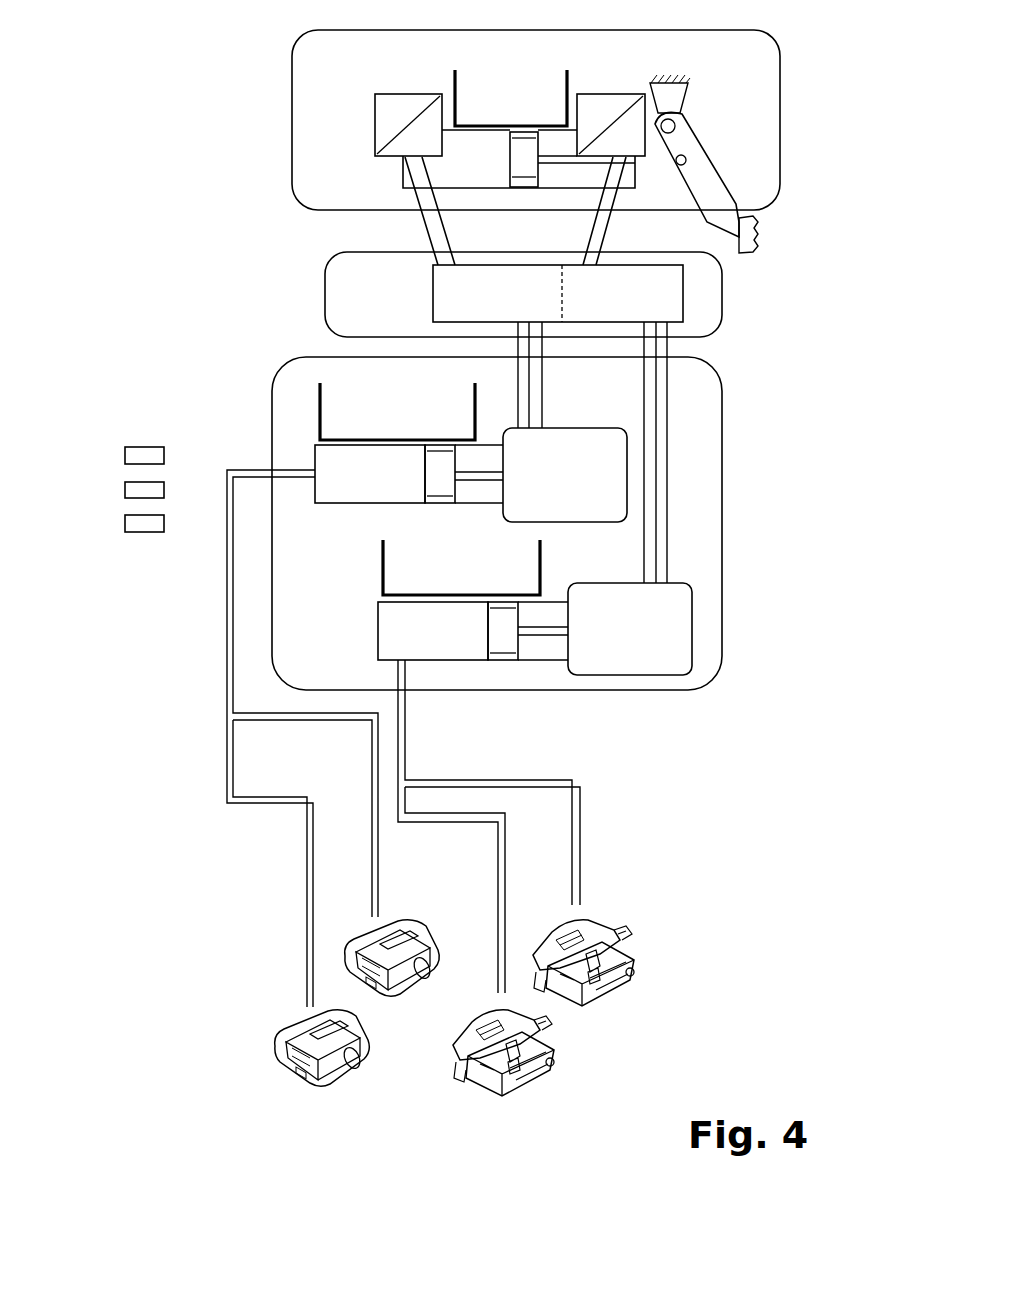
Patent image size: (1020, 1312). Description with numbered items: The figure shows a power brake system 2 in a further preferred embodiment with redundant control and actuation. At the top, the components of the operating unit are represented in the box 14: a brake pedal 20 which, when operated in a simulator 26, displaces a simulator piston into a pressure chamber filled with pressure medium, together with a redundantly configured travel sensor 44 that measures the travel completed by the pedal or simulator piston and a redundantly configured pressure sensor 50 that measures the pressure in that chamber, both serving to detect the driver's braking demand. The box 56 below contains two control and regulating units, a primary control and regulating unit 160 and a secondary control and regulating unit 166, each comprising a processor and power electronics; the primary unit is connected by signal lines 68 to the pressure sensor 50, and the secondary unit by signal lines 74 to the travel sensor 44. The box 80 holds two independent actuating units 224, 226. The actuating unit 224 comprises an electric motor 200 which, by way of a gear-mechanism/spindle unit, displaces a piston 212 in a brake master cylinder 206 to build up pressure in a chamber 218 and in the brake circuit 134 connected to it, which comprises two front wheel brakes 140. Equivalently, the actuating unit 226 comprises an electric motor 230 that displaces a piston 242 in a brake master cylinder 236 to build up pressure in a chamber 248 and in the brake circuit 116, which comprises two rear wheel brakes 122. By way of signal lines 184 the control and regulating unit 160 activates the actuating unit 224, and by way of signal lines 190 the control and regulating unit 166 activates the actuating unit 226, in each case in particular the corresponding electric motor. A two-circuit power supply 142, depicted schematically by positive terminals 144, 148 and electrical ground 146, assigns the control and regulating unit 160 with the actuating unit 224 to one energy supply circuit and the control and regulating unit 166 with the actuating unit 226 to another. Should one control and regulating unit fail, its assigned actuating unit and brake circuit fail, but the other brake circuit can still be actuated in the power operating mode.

The power brake system 2 is at (247, 30).
The box 14 is at (781, 80).
The brake pedal 20 is at (690, 176).
The simulator 26 is at (403, 174).
The travel sensor 44 is at (613, 93).
The pressure sensor 50 is at (411, 93).
The box 56 is at (723, 278).
The signal lines 68 is at (430, 236).
The signal lines 74 is at (594, 236).
The box 80 is at (723, 507).
The first brake circuit 116 is at (405, 757).
The rear wheel brakes 122 is at (606, 912).
The second brake circuit 134 is at (227, 681).
The front wheel brakes 140 is at (418, 928).
The power supply 142 is at (140, 432).
The positive terminal 144 is at (128, 490).
The electrical ground 146 is at (128, 523).
The positive terminal 148 is at (128, 456).
The primary control and regulating unit 160 is at (433, 293).
The secondary control and regulating unit 166 is at (683, 305).
The signal lines 184 is at (529, 395).
The signal lines 190 is at (644, 452).
The electric motor 200 is at (597, 490).
The brake master cylinder 206 is at (481, 505).
The piston 212 is at (441, 475).
The chamber 218 is at (340, 483).
The actuating unit 224 is at (570, 428).
The actuating unit 226 is at (700, 610).
The electric motor 230 is at (680, 652).
The brake master cylinder 236 is at (448, 662).
The piston 242 is at (507, 660).
The chamber 248 is at (390, 637).